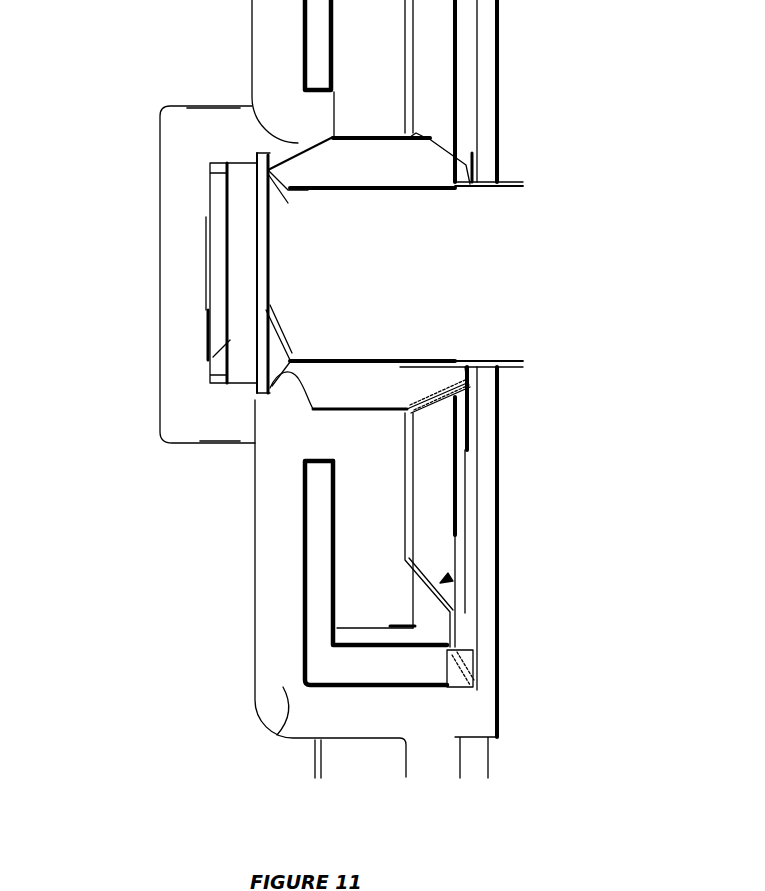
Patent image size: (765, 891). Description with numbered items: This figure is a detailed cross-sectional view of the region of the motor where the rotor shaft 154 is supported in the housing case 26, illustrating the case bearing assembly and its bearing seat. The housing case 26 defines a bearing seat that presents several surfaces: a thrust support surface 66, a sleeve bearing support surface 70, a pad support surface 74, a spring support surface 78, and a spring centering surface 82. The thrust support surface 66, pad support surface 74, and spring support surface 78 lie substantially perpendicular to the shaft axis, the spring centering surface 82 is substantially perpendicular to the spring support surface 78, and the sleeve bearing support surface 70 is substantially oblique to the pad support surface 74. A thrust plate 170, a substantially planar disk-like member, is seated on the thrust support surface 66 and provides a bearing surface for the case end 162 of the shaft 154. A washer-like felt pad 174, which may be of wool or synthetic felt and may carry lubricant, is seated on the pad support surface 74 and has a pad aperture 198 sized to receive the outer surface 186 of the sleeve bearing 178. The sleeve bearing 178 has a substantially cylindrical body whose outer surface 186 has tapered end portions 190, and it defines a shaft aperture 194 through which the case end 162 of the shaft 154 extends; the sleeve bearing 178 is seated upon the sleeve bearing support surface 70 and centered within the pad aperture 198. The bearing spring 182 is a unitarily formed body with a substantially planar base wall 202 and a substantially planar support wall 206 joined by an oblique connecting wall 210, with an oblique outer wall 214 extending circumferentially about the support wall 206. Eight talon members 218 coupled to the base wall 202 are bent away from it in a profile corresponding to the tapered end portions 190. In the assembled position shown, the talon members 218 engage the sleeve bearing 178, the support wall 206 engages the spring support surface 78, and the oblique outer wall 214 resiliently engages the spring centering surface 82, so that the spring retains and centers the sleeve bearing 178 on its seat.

The housing case 26 is at (283, 687).
The thrust support surface 66 is at (213, 357).
The sleeve bearing support surface 70 is at (283, 393).
The pad support surface 74 is at (363, 440).
The spring support surface 78 is at (445, 695).
The spring centering surface 82 is at (513, 643).
The shaft 154 is at (420, 283).
The case end 162 is at (303, 263).
The thrust plate 170 is at (220, 195).
The felt pad 174 is at (355, 583).
The sleeve bearing 178 is at (397, 163).
The bearing spring 182 is at (447, 578).
The outer surface 186 is at (368, 136).
The tapered end portions 190 is at (297, 143).
The shaft aperture 194 is at (372, 192).
The pad aperture 198 is at (375, 422).
The base wall 202 is at (413, 523).
The support wall 206 is at (457, 640).
The oblique connecting wall 210 is at (443, 610).
The oblique outer wall 214 is at (460, 668).
The talon members 218 is at (413, 388).